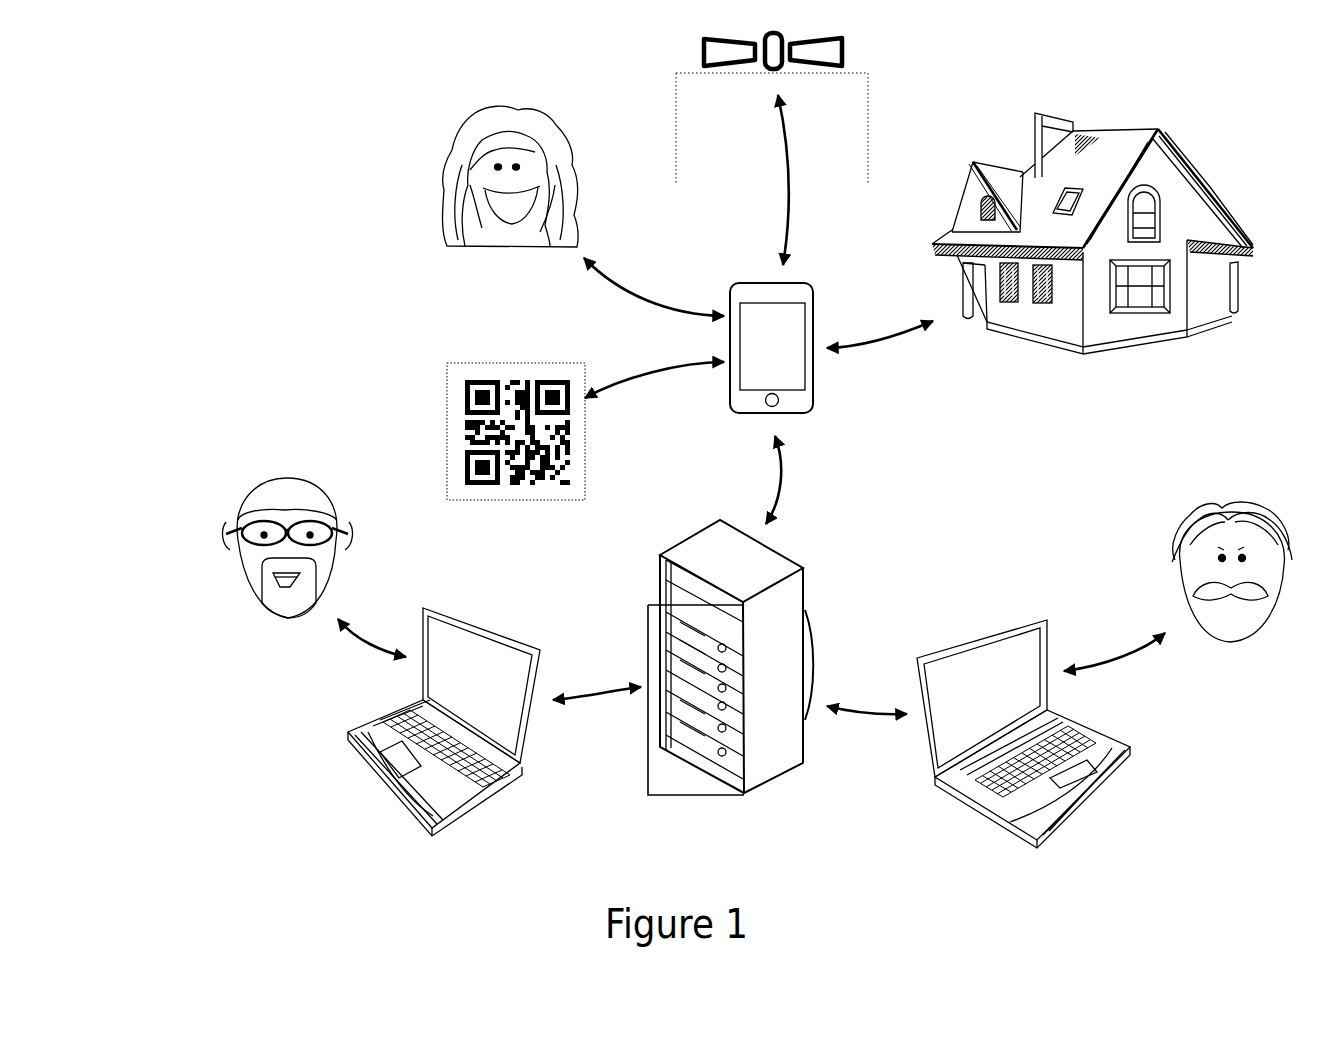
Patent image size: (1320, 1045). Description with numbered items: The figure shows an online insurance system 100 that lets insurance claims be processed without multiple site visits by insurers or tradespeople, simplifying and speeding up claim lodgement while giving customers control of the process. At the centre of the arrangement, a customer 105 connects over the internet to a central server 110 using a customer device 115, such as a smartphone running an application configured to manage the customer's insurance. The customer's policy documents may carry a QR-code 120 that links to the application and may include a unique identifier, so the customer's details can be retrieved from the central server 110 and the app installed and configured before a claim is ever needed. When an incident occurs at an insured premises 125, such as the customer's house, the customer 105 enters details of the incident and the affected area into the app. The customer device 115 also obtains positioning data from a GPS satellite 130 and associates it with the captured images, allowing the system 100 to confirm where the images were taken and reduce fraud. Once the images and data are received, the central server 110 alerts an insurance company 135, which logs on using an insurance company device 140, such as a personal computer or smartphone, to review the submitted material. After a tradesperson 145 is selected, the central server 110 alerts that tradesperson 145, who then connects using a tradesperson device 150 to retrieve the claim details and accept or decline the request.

The online insurance system 100 is at (264, 215).
The customer 105 is at (434, 156).
The central server 110 is at (681, 526).
The customer device 115 is at (718, 267).
The QR-code 120 is at (446, 395).
The insured premises 125 is at (1222, 160).
The GPS satellite 130 is at (690, 51).
The insurance company 135 is at (229, 492).
The insurance company device 140 is at (363, 779).
The tradesperson 145 is at (1171, 516).
The tradesperson device 150 is at (945, 632).